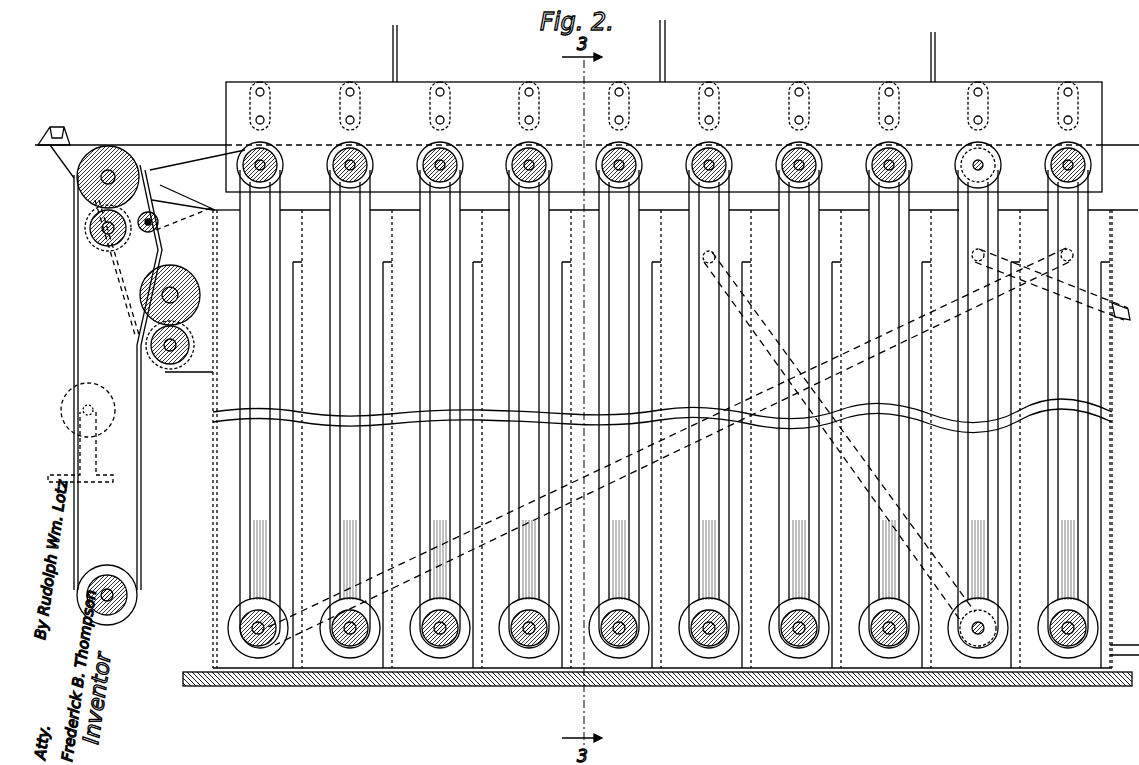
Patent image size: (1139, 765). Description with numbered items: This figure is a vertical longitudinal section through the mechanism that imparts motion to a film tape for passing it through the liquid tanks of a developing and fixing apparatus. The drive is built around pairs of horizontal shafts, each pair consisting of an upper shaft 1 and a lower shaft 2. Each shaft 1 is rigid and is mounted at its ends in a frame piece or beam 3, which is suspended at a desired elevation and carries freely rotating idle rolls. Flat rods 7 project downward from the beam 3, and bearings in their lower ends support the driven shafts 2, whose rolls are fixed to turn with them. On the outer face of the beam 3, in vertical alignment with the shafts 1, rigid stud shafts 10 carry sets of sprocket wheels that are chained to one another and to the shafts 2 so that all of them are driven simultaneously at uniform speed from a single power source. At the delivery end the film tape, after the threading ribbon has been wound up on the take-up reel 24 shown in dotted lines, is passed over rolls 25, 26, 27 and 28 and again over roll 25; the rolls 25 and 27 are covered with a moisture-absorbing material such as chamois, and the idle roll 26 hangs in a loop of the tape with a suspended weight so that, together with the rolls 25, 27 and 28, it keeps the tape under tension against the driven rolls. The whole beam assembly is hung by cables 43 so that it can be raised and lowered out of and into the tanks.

The shaft 1 is at (462, 160).
The shaft 2 is at (250, 628).
The frame piece 3 is at (300, 88).
The flat rod 7 is at (1068, 527).
The stud shaft 10 is at (436, 82).
The take-up reel 24 is at (110, 442).
The roll 25 is at (118, 150).
The idle roll 26 is at (115, 595).
The roll 27 is at (176, 265).
The roll 28 is at (156, 218).
The cable 43 is at (392, 47).